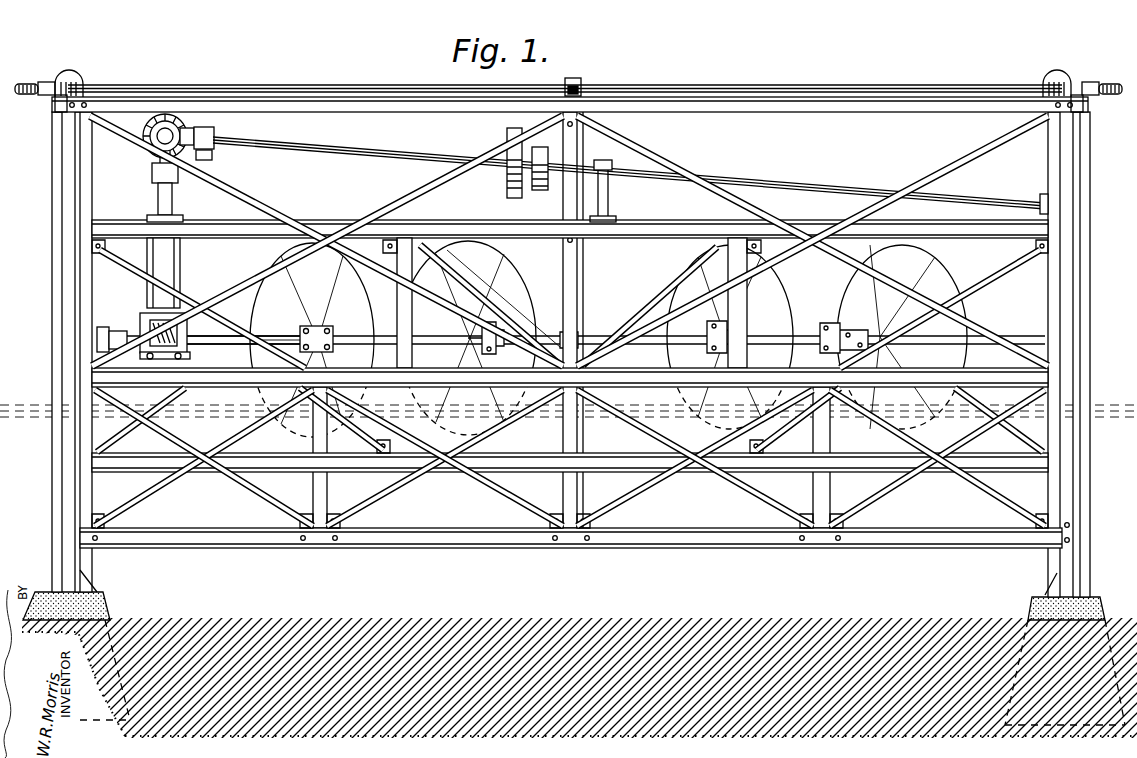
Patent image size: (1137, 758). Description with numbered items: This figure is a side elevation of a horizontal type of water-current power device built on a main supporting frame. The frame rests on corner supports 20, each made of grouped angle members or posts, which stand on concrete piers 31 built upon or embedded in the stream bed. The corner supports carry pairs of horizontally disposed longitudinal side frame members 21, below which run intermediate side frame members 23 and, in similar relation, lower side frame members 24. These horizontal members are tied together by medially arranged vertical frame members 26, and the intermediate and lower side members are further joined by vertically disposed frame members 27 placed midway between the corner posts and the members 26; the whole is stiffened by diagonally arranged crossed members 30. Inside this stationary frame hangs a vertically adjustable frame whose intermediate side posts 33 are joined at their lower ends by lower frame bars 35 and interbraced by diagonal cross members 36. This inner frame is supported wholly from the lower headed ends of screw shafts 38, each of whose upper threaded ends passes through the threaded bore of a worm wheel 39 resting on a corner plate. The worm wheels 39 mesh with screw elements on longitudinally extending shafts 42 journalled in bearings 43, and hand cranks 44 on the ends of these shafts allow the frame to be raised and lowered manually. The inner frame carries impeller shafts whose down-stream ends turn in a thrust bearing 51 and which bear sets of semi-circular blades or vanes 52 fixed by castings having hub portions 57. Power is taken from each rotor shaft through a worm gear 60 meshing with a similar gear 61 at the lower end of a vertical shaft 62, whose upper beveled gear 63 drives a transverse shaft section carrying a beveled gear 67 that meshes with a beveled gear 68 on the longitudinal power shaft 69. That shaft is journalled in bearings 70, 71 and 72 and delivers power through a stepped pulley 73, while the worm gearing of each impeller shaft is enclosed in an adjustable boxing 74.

The corner supports 20 is at (70, 497).
The longitudinal side frame members 21 is at (430, 114).
The intermediate side frame members 23 is at (221, 380).
The lower side frame members 24 is at (439, 549).
The medially arranged vertical frame members 26 is at (590, 456).
The vertically disposed frame members 27 is at (308, 490).
The diagonally arranged crossed members 30 is at (438, 180).
The concrete piers 31 is at (108, 597).
The intermediate side members or posts 33 is at (402, 293).
The lower end and side frame members or bars 35 is at (551, 240).
The diagonally arranged cross members 36 is at (200, 294).
The screw shafts 38 is at (73, 76).
The worm wheel 39 is at (57, 102).
The longitudinally extending shafts 42 is at (352, 84).
The bearings 43 is at (578, 82).
The hand cranks 44 is at (37, 82).
The thrust bearing 51 is at (108, 326).
The blades or vanes 52 is at (275, 280).
The hub portions 57 is at (330, 338).
The worm gear 60 is at (148, 330).
The worm gear 61 is at (145, 352).
The vertical shaft 62 is at (158, 201).
The beveled gear 63 is at (152, 170).
The beveled gear 67 is at (148, 131).
The beveled gear 68 is at (200, 136).
The power shaft 69 is at (362, 152).
The bearing 70 is at (222, 141).
The bearing 71 is at (605, 158).
The bearing 72 is at (1040, 198).
The stepped pulley 73 is at (527, 191).
The adjustable boxing 74 is at (183, 346).